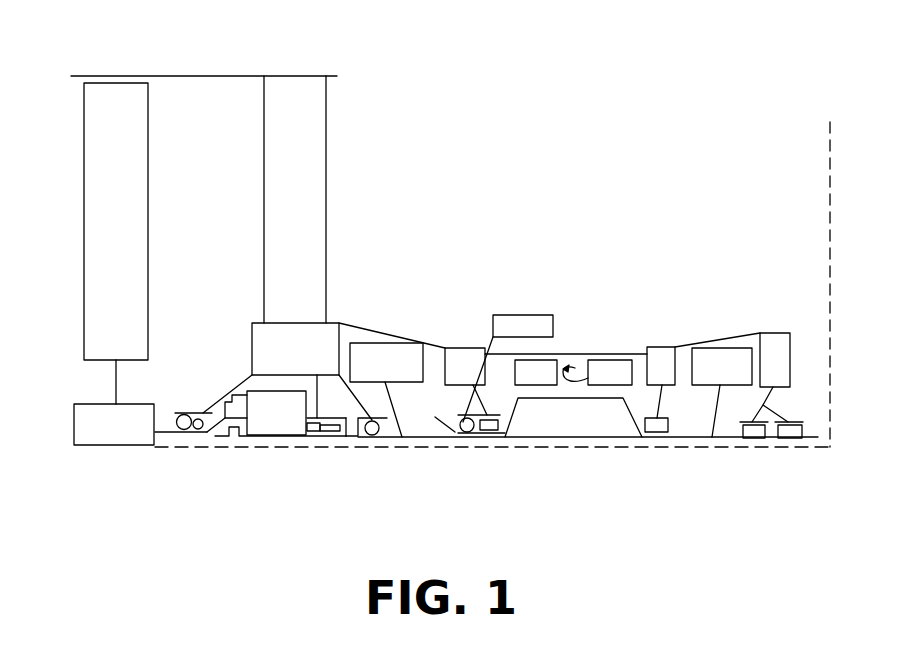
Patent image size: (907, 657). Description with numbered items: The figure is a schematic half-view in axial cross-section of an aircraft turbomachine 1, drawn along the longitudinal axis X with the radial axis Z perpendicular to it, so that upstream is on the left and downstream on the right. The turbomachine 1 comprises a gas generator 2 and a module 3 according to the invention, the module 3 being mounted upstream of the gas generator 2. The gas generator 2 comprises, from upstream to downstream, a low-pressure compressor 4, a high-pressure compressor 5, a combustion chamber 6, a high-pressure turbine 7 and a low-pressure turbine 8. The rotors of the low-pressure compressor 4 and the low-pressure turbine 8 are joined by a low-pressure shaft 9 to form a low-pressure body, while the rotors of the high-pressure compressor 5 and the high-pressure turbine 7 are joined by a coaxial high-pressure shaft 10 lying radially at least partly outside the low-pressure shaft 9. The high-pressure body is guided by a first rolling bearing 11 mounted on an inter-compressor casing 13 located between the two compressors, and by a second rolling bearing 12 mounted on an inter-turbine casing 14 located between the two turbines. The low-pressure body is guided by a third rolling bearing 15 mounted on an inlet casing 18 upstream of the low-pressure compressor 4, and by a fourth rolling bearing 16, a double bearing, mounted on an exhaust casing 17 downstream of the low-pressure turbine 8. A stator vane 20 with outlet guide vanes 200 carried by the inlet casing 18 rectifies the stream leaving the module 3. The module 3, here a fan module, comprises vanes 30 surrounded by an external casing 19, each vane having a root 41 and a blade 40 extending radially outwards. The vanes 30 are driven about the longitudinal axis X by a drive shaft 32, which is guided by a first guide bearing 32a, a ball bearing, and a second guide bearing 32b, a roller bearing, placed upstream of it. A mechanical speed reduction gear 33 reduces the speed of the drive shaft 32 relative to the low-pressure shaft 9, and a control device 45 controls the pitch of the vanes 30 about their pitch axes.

The turbomachine 1 is at (532, 97).
The gas generator 2 is at (575, 267).
The module 3 is at (80, 308).
The low-pressure compressor 4 is at (385, 358).
The high-pressure compressor 5 is at (542, 365).
The combustion chamber 6 is at (570, 372).
The high-pressure turbine 7 is at (607, 365).
The low-pressure turbine 8 is at (702, 353).
The low-pressure shaft 9 is at (600, 442).
The high-pressure shaft 10 is at (510, 440).
The first rolling bearing 11 is at (463, 440).
The second rolling bearing 12 is at (655, 440).
The inter-compressor casing 13 is at (452, 348).
The inter-turbine casing 14 is at (653, 363).
The third rolling bearing 15 is at (366, 440).
The fourth rolling bearing 16 is at (790, 438).
The exhaust casing 17 is at (780, 345).
The inlet casing 18 is at (327, 327).
The external casing 19 is at (180, 75).
The stator vane 20 is at (340, 138).
The vanes 200 is at (326, 215).
The vanes 30 is at (77, 208).
The drive shaft 32 is at (197, 433).
The first guide bearing 32a is at (200, 412).
The second guide bearing 32b is at (183, 413).
The mechanical speed reduction gear 33 is at (283, 425).
The blade 40 is at (87, 247).
The root 41 is at (112, 363).
The control device 45 is at (88, 437).
The longitudinal axis X is at (807, 447).
The radial axis Z is at (830, 125).